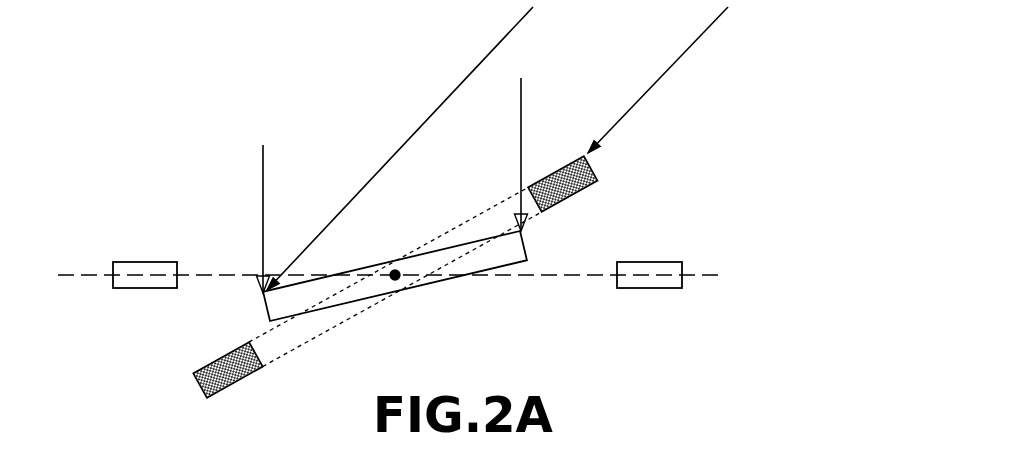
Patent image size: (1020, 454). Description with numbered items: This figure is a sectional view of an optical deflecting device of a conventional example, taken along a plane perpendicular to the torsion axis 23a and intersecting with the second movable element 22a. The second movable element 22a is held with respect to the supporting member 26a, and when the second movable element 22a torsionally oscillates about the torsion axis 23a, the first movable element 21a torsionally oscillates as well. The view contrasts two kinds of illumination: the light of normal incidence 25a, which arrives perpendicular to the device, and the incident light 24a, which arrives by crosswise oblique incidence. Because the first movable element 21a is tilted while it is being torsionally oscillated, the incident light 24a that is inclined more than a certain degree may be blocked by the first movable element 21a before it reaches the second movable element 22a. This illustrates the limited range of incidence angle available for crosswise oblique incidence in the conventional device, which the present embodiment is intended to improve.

The first movable element 21a is at (597, 180).
The second movable element 22a is at (527, 257).
The torsion axis 23a is at (400, 280).
The incident light 24a is at (517, 25).
The light of normal incidence 25a is at (265, 163).
The supporting member 26a is at (138, 260).